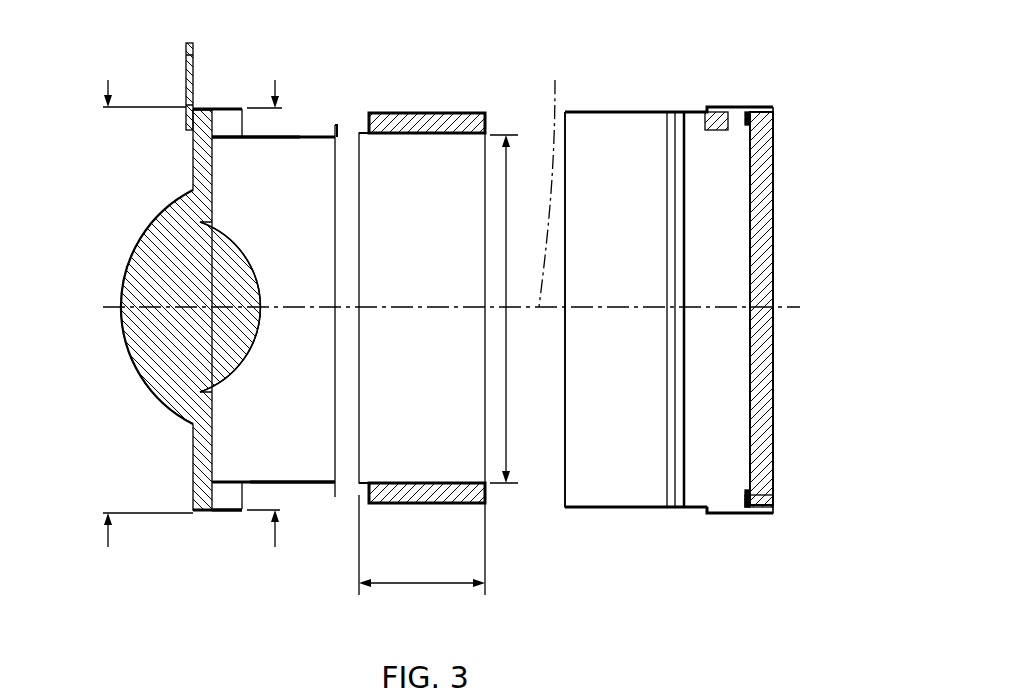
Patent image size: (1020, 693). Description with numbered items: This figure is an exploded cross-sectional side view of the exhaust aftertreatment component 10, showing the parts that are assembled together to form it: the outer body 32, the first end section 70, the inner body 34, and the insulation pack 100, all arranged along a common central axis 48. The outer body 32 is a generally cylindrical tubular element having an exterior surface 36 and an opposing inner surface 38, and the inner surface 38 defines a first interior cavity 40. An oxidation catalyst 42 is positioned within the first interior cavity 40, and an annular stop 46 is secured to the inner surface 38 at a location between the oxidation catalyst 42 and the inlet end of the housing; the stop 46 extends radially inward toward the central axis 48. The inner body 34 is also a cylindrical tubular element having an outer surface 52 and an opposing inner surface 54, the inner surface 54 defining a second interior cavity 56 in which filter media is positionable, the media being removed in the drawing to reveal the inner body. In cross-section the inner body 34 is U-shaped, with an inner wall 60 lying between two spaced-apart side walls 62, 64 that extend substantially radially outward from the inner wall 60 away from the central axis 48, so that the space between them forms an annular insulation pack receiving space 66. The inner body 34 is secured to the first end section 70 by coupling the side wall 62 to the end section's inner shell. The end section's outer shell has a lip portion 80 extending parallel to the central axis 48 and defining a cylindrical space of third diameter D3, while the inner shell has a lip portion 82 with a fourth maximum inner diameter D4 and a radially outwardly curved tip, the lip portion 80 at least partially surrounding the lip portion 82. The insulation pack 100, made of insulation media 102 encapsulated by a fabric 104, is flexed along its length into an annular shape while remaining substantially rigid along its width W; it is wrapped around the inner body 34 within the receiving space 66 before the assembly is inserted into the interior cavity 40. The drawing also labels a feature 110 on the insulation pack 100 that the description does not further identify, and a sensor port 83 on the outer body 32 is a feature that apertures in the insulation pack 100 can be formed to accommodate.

The exhaust aftertreatment component 10 is at (657, 60).
The outer body 32 is at (698, 524).
The inner body 34 is at (298, 492).
The exterior surface 36 is at (638, 510).
The inner surface 38 is at (605, 503).
The first interior cavity 40 is at (669, 310).
The oxidation catalyst 42 is at (765, 172).
The annular stop 46 is at (682, 148).
The central axis 48 is at (552, 183).
The outer surface 52 is at (305, 136).
The inner surface 54 is at (225, 431).
The second interior cavity 56 is at (273, 311).
The inner wall 60 is at (268, 148).
The side wall 62 is at (207, 127).
The side wall 64 is at (340, 126).
The insulation pack receiving space 66 is at (267, 121).
The first end section 70 is at (150, 390).
The lip portion 80 is at (210, 513).
The lip portion 82 is at (235, 509).
The sensor port 83 is at (712, 110).
The insulation pack 100 is at (493, 540).
The insulation media 102 is at (378, 502).
The fabric 104 is at (423, 507).
The sealing ring 110 is at (410, 122).
The third diameter D3 is at (108, 533).
The fourth diameter D4 is at (273, 538).
The width W is at (422, 587).